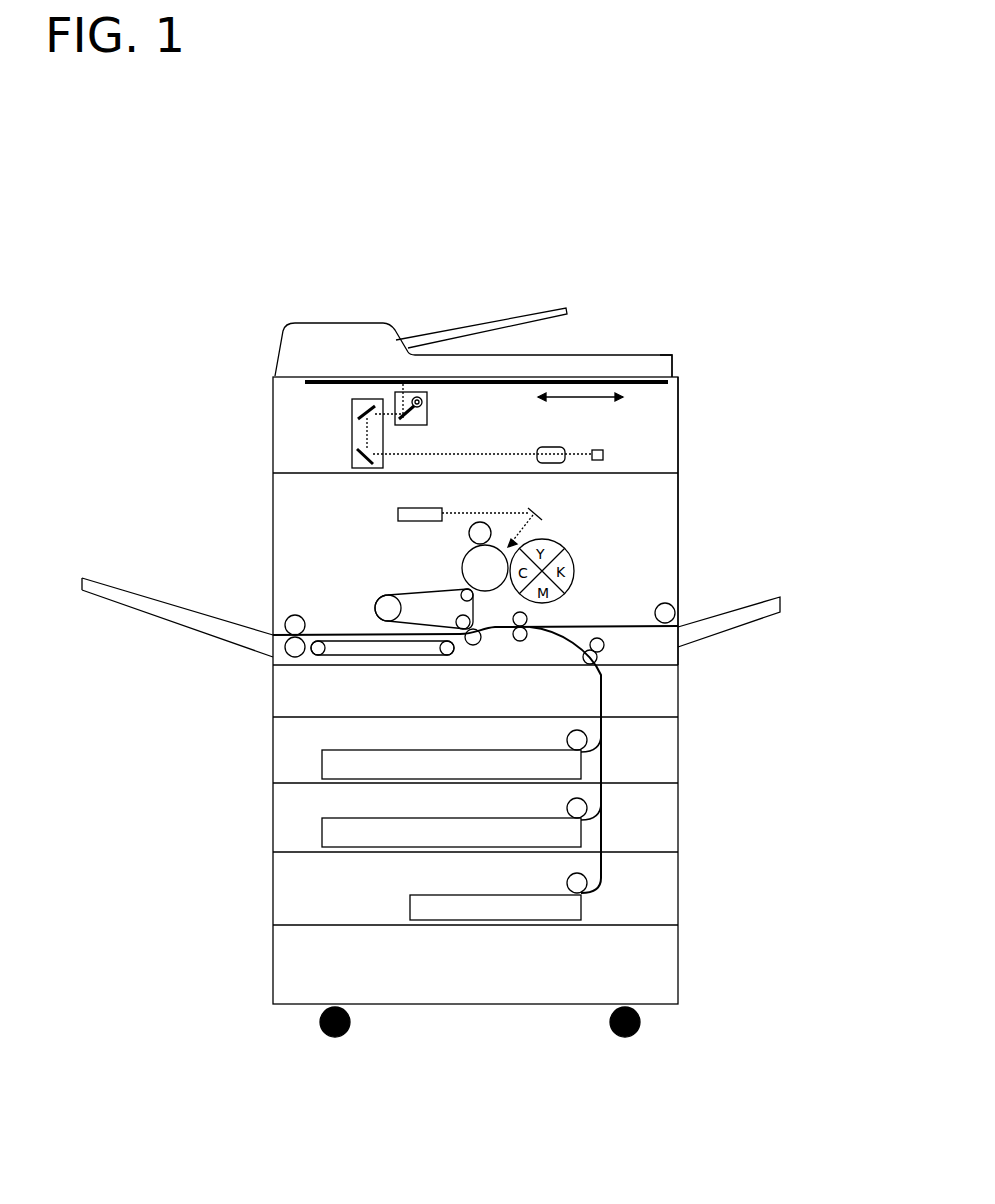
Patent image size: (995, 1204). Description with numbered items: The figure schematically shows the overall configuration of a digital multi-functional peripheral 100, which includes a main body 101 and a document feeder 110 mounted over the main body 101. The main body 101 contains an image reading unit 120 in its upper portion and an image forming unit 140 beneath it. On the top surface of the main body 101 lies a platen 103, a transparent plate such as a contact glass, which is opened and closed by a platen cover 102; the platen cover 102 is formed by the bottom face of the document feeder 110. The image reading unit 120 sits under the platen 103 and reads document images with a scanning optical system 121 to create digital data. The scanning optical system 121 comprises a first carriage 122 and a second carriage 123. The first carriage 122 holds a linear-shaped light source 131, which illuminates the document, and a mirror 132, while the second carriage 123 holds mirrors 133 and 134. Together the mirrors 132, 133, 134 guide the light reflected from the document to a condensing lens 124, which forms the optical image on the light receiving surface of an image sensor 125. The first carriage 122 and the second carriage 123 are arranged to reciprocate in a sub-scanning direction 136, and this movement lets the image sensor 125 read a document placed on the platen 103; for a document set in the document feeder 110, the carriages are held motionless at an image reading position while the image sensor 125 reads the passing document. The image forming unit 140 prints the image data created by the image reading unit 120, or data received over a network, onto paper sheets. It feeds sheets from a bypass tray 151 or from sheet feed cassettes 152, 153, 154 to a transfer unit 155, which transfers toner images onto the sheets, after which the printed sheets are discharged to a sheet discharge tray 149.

The multi-functional peripheral 100 is at (675, 252).
The main body 101 is at (253, 482).
The platen cover 102 is at (253, 325).
The platen 103 is at (598, 379).
The document feeder 110 is at (343, 322).
The image reading unit 120 is at (679, 442).
The scanning optical system 121 is at (662, 410).
The first carriage 122 is at (413, 427).
The second carriage 123 is at (351, 414).
The condensing lens 124 is at (568, 446).
The image sensor 125 is at (604, 455).
The light source 131 is at (425, 401).
The mirror 132 is at (412, 413).
The mirror 133 is at (356, 408).
The mirror 134 is at (362, 459).
The sub-scanning direction 136 is at (585, 410).
The image forming unit 140 is at (679, 488).
The sheet discharge tray 149 is at (103, 590).
The bypass tray 151 is at (722, 628).
The sheet feed cassette 152 is at (328, 762).
The sheet feed cassette 153 is at (328, 830).
The sheet feed cassette 154 is at (410, 905).
The transfer unit 155 is at (474, 646).